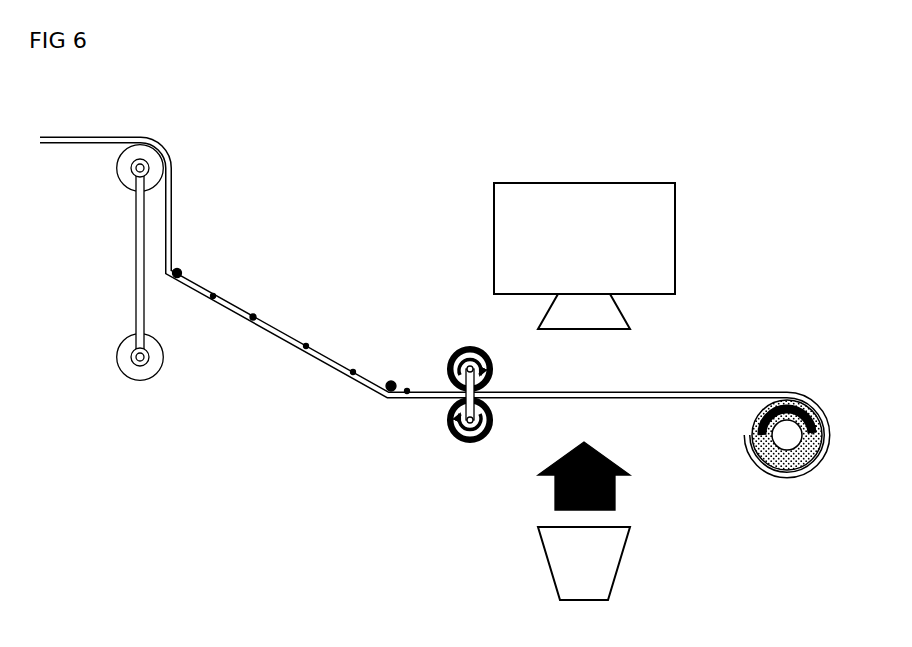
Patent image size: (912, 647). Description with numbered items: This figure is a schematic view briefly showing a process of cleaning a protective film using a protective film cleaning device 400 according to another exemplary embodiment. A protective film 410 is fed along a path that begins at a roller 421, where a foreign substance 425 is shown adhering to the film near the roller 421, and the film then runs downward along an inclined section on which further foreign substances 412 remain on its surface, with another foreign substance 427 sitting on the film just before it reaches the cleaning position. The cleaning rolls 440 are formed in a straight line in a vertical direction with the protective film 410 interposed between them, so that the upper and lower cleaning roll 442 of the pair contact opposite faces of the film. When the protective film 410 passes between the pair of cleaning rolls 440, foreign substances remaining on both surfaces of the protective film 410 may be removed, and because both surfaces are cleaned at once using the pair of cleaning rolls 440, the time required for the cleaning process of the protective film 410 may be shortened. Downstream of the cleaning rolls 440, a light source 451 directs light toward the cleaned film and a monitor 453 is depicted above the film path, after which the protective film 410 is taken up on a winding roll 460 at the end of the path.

The roll-to-roll inspection apparatus 400 is at (87, 128).
The supply roller / guide roller 421 is at (161, 170).
The foreign substance particle 425 is at (181, 270).
The dust particles on substrate 412 is at (256, 315).
The foreign substance on substrate 427 is at (391, 381).
The protective film 410 is at (408, 389).
The pressing roller 442 is at (470, 346).
The cleaning rolls 440 is at (532, 373).
The display monitor 453 is at (520, 197).
The light source 451 is at (606, 572).
The winding roller 460 is at (767, 453).